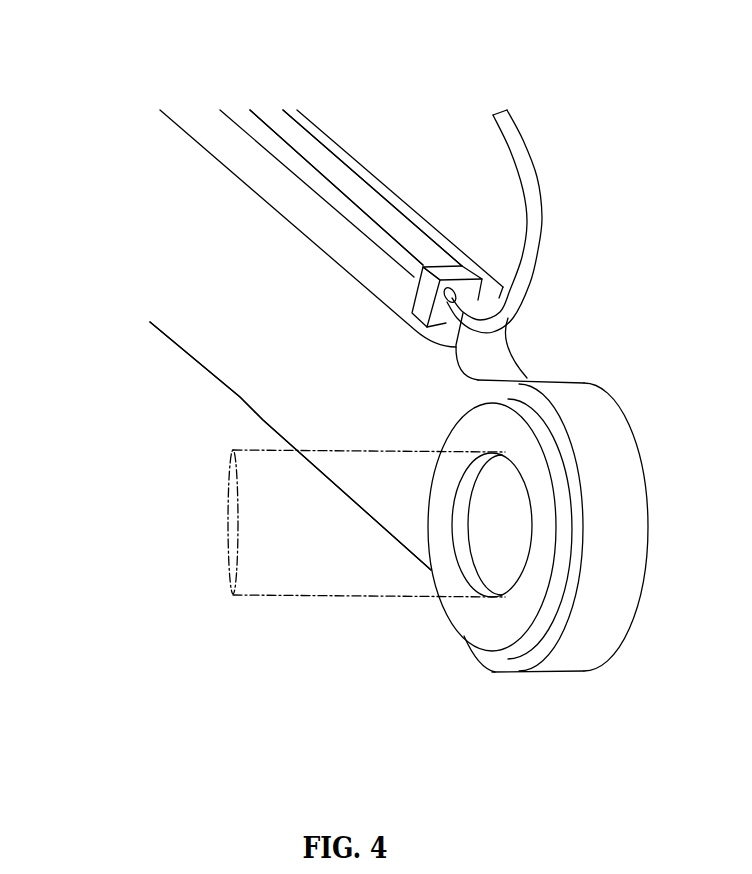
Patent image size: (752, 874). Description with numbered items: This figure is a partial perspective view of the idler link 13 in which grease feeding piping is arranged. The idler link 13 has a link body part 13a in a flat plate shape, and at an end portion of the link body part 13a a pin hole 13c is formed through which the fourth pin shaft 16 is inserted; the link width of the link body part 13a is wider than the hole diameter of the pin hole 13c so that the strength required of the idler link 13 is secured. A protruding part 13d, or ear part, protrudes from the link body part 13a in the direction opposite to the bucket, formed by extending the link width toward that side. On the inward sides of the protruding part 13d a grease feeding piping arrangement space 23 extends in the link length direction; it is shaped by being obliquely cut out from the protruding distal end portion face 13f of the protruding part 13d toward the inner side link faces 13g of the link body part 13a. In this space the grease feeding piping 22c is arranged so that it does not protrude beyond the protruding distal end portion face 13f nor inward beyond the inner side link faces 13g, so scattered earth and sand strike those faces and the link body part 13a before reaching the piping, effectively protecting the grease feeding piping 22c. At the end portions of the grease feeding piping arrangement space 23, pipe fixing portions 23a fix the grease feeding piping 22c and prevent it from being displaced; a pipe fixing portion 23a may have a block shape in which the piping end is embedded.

The idler link 13 is at (195, 287).
The link body part 13a is at (278, 385).
The pin hole 13c is at (500, 538).
The protruding part 13d is at (492, 300).
The protruding distal end portion face 13f is at (370, 173).
The inner side link face 13g is at (215, 345).
The fourth pin shaft 16 is at (305, 563).
The grease feeding piping 22c is at (363, 225).
The grease feeding piping arrangement space 23 is at (316, 157).
The pipe fixing portion 23a is at (447, 272).